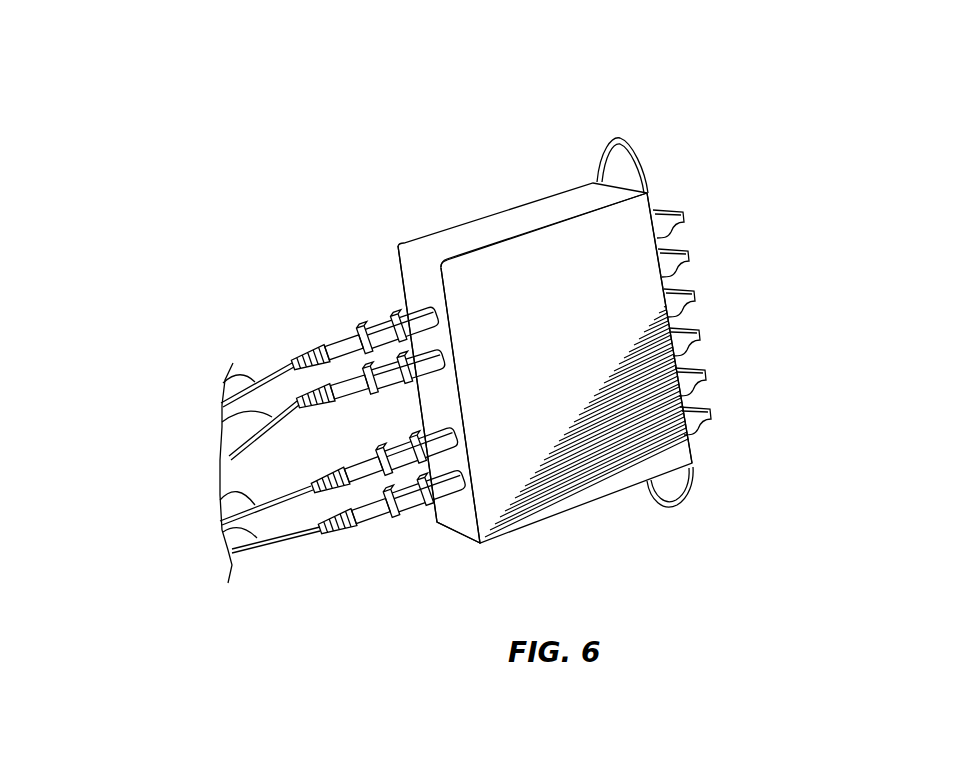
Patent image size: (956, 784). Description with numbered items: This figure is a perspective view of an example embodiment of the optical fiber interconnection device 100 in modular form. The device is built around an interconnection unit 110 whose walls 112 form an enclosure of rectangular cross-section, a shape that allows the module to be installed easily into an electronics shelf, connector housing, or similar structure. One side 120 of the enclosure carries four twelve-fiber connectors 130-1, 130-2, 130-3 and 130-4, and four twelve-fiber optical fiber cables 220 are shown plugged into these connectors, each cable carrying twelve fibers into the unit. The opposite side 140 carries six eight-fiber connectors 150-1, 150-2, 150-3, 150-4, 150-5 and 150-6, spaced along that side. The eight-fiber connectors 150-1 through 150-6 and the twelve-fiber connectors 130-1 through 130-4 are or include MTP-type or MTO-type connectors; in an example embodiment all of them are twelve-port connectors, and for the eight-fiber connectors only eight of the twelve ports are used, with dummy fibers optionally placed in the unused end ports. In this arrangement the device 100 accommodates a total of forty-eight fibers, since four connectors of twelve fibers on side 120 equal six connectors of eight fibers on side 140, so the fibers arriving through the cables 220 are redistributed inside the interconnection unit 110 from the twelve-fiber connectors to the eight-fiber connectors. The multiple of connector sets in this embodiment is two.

The optical fiber interconnection device 100 is at (313, 80).
The interconnection unit 110 is at (432, 216).
The walls 112 is at (504, 222).
The side 120 is at (444, 546).
The 12f connector 130-1 is at (398, 312).
The 12f connector 130-2 is at (401, 352).
The 12f connector 130-3 is at (420, 437).
The 12f connector 130-4 is at (423, 508).
The opposite side 140 is at (720, 455).
The 8f connector 150-1 is at (685, 215).
The 8f connector 150-2 is at (690, 254).
The 8f connector 150-3 is at (696, 294).
The 8f connector 150-4 is at (701, 333).
The 8f connector 150-5 is at (707, 373).
The 8f connector 150-6 is at (712, 412).
The 12f optical fiber cables 220 is at (222, 530).